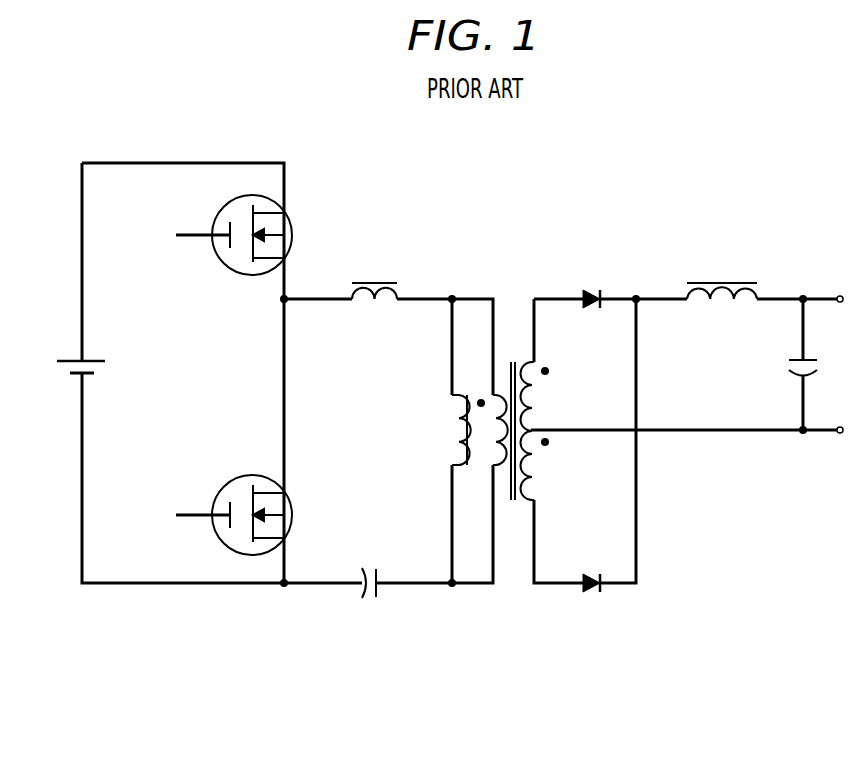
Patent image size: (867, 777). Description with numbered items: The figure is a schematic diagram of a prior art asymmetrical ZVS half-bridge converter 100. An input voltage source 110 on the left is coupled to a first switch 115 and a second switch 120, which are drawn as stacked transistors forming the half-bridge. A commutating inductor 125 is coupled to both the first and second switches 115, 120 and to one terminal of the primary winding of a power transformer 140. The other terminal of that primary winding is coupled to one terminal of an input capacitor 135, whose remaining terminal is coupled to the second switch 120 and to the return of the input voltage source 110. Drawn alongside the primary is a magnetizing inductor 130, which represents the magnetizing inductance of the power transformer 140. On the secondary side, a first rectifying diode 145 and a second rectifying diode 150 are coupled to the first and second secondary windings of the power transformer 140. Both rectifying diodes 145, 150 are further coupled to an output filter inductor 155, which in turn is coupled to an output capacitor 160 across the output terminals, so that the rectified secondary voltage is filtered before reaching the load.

The asymmetrical ZVS half-bridge converter 100 is at (715, 173).
The input voltage source 110 is at (62, 360).
The first switch 115 is at (240, 276).
The second switch 120 is at (228, 478).
The commutating inductor 125 is at (372, 283).
The magnetizing inductor 130 is at (450, 440).
The input capacitor 135 is at (378, 592).
The power transformer 140 is at (515, 356).
The first rectifying diode 145 is at (592, 290).
The second rectifying diode 150 is at (596, 592).
The output filter inductor 155 is at (738, 283).
The output capacitor 160 is at (836, 362).